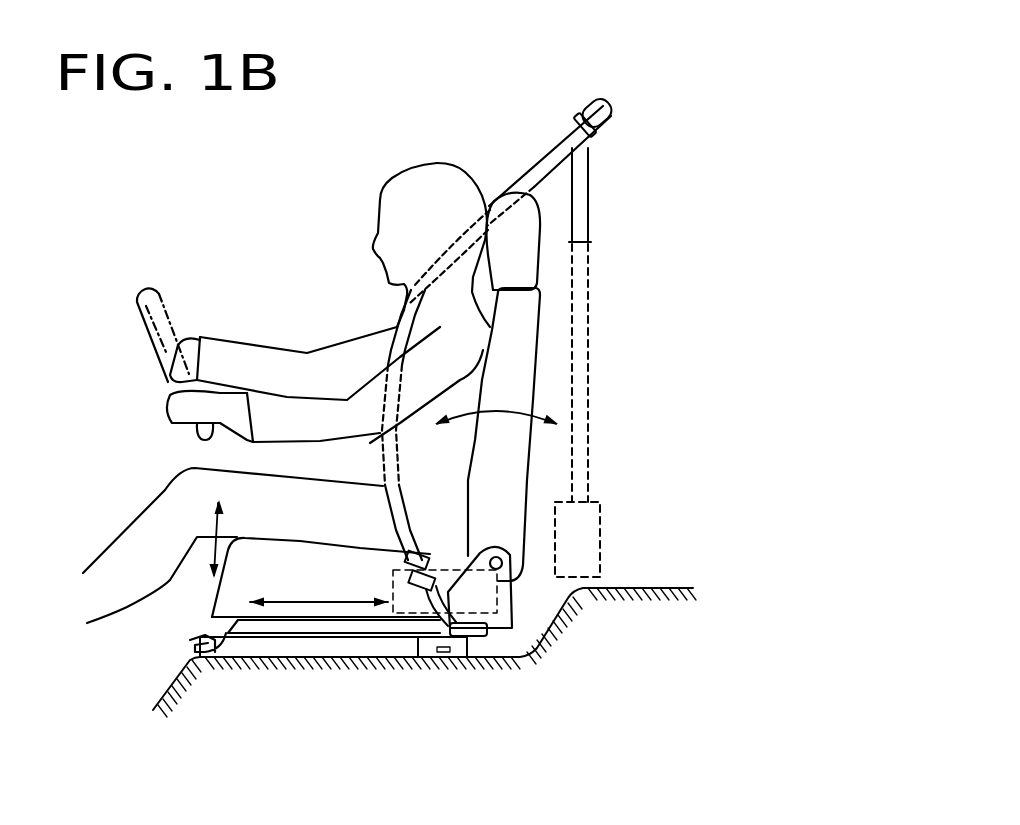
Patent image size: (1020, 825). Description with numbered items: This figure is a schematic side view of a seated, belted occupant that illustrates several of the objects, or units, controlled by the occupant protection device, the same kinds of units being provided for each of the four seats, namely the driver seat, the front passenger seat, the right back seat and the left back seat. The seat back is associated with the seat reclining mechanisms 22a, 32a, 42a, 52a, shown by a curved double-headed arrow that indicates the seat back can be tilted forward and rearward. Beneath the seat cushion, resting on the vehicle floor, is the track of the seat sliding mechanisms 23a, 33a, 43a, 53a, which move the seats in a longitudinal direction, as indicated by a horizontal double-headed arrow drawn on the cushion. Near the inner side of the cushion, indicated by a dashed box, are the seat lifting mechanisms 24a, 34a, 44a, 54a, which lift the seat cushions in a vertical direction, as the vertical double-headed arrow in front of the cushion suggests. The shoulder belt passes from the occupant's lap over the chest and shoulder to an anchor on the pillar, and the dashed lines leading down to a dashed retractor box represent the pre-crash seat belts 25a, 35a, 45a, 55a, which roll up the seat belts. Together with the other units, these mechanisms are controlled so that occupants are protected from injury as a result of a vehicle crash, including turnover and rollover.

The seat reclining mechanism 22a is at (629, 458).
The seat reclining mechanism 32a is at (629, 458).
The seat reclining mechanism 42a is at (629, 458).
The seat reclining mechanism 52a is at (543, 379).
The seat sliding mechanism 23a is at (411, 683).
The seat sliding mechanism 33a is at (411, 683).
The seat sliding mechanism 43a is at (411, 683).
The seat sliding mechanism 53a is at (332, 645).
The seat lifting mechanism 24a is at (605, 607).
The seat lifting mechanism 34a is at (605, 607).
The seat lifting mechanism 44a is at (605, 607).
The seat lifting mechanism 54a is at (498, 583).
The pre-crash seat belt 25a is at (704, 336).
The pre-crash seat belt 35a is at (704, 336).
The pre-crash seat belt 45a is at (704, 336).
The pre-crash seat belt 55a is at (593, 382).